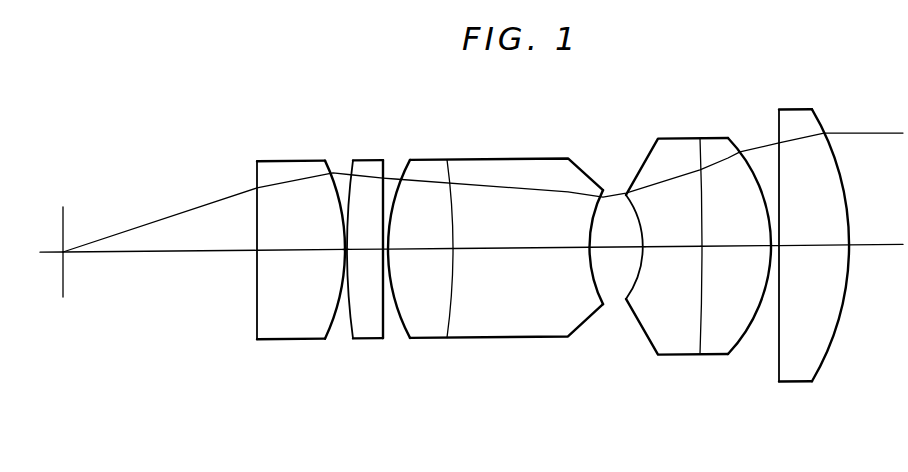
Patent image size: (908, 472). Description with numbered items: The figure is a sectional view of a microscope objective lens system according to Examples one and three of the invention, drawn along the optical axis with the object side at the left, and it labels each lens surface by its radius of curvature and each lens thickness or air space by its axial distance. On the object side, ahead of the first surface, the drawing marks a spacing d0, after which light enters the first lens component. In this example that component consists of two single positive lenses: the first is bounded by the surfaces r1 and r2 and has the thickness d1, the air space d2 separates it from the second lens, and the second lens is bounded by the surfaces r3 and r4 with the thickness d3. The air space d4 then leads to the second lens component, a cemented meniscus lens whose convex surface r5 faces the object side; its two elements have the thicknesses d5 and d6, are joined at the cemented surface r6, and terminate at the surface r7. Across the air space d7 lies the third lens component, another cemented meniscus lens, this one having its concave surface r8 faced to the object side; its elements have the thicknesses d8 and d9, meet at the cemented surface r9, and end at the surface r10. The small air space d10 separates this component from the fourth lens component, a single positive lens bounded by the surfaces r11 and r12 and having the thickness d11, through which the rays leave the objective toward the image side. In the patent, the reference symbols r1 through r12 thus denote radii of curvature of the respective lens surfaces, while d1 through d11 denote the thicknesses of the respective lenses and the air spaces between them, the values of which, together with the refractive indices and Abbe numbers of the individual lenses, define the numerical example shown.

The object distance d0 is at (233, 248).
The thickness of first lens d1 is at (288, 248).
The air space between first and second lenses d2 is at (345, 248).
The thickness of second lens d3 is at (367, 248).
The air space between first and second lens components d4 is at (388, 248).
The thickness of third lens d5 is at (427, 248).
The thickness of fourth lens d6 is at (503, 248).
The air space between second and third lens components d7 is at (617, 248).
The thickness of fifth lens d8 is at (668, 248).
The thickness of sixth lens d9 is at (724, 248).
The air space between third and fourth lens components d10 is at (774, 248).
The thickness of seventh lens d11 is at (828, 248).
The radius of curvature of first lens surface r1 is at (257, 336).
The radius of curvature of second lens surface r2 is at (327, 338).
The radius of curvature of third lens surface r3 is at (353, 338).
The radius of curvature of fourth lens surface r4 is at (383, 338).
The radius of curvature of fifth lens surface r5 is at (410, 338).
The radius of curvature of sixth lens surface r6 is at (447, 338).
The radius of curvature of seventh lens surface r7 is at (597, 292).
The radius of curvature of eighth lens surface r8 is at (634, 284).
The radius of curvature of ninth lens surface r9 is at (697, 357).
The radius of curvature of tenth lens surface r10 is at (733, 357).
The radius of curvature of eleventh lens surface r11 is at (779, 358).
The radius of curvature of twelfth lens surface r12 is at (823, 365).